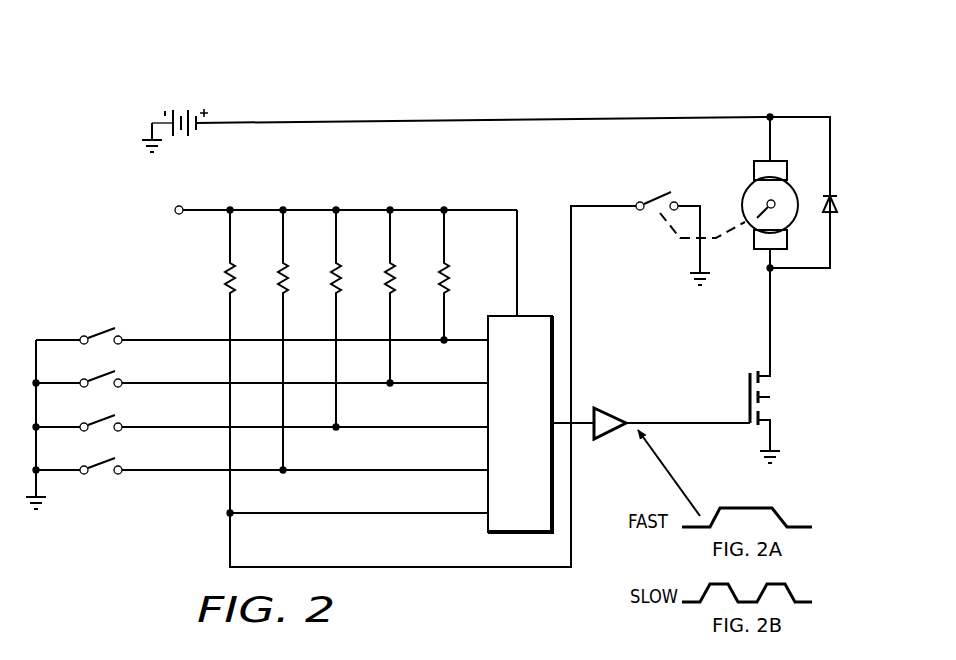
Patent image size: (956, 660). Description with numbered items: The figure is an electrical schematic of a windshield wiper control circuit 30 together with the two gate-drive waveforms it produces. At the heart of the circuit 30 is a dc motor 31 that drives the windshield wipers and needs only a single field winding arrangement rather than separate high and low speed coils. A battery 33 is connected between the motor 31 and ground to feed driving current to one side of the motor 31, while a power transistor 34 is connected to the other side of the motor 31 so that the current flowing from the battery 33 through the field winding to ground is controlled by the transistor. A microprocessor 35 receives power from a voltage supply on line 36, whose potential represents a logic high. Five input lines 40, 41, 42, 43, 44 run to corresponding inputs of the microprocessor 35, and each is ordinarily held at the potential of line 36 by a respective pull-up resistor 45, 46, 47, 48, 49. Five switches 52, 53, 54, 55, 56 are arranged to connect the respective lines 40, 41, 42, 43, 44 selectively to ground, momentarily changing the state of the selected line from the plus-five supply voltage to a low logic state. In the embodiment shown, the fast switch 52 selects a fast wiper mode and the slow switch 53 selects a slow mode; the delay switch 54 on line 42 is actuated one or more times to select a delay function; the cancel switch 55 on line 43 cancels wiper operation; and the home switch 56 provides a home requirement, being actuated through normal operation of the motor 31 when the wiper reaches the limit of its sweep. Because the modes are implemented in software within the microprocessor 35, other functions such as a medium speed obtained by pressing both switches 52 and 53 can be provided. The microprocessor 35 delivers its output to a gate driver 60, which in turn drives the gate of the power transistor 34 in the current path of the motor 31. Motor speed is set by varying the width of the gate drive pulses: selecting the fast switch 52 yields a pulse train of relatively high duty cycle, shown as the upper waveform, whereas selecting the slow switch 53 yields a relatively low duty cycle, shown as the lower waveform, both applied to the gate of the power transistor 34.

The windshield wiper control circuit 30 is at (566, 97).
The dc motor 31 is at (746, 194).
The battery 33 is at (188, 107).
The power transistor 34 is at (794, 398).
The microprocessor 35 is at (532, 478).
The voltage supply line 36 is at (443, 208).
The input line 40 is at (466, 348).
The input line 41 is at (466, 392).
The input line 42 is at (466, 436).
The input line 43 is at (466, 480).
The input line 44 is at (466, 523).
The resistor 45 is at (441, 270).
The resistor 46 is at (387, 270).
The resistor 47 is at (333, 270).
The resistor 48 is at (279, 270).
The resistor 49 is at (226, 270).
The fast speed switch 52 is at (92, 338).
The slow speed switch 53 is at (92, 381).
The delay switch 54 is at (92, 425).
The cancel switch 55 is at (92, 468).
The home switch 56 is at (650, 198).
The gate driver 60 is at (610, 411).